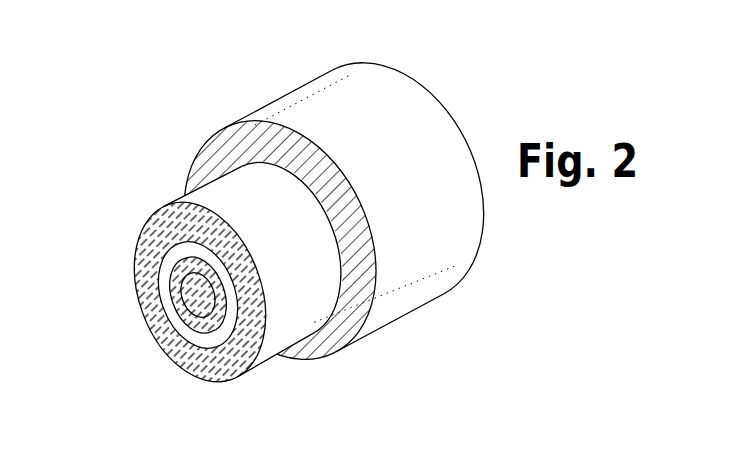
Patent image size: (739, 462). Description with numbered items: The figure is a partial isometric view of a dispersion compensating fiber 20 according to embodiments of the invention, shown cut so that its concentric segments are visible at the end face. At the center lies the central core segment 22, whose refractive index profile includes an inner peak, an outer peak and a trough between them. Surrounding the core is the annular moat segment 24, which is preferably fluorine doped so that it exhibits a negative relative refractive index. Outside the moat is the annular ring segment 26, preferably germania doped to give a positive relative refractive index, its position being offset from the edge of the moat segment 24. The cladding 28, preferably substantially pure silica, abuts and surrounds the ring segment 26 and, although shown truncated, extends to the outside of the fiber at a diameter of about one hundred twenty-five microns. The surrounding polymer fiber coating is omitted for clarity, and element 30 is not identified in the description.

The dispersion compensating fiber 20 is at (421, 265).
The central core segment 22 is at (183, 295).
The annular moat segment 24 is at (222, 332).
The annular ring segment 26 is at (213, 330).
The cladding 28 is at (164, 338).
The ferrule body 30 is at (203, 181).